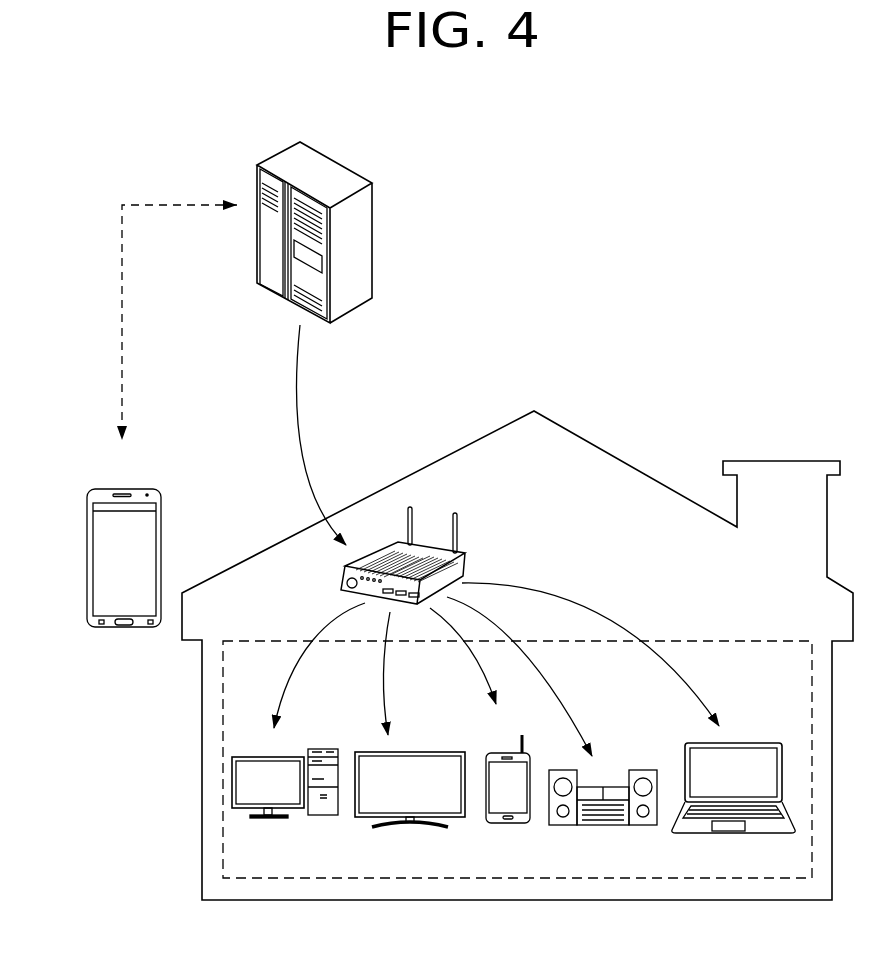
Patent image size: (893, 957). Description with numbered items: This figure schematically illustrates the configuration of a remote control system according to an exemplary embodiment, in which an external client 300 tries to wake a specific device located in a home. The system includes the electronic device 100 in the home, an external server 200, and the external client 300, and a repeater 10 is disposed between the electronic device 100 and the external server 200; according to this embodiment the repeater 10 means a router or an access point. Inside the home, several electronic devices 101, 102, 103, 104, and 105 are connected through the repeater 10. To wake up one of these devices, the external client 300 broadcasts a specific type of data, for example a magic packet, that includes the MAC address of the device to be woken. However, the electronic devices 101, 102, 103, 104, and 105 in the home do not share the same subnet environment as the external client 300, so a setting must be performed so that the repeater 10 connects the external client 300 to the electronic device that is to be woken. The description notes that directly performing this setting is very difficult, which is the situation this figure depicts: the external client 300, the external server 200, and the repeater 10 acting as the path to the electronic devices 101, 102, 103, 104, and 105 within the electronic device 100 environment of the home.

The repeater 10 is at (463, 558).
The electronic device 100 is at (793, 641).
The electronic device 101 is at (248, 757).
The electronic device 102 is at (437, 752).
The electronic device 103 is at (497, 753).
The electronic device 104 is at (641, 770).
The electronic device 105 is at (760, 743).
The external server 200 is at (335, 160).
The external client 300 is at (145, 489).